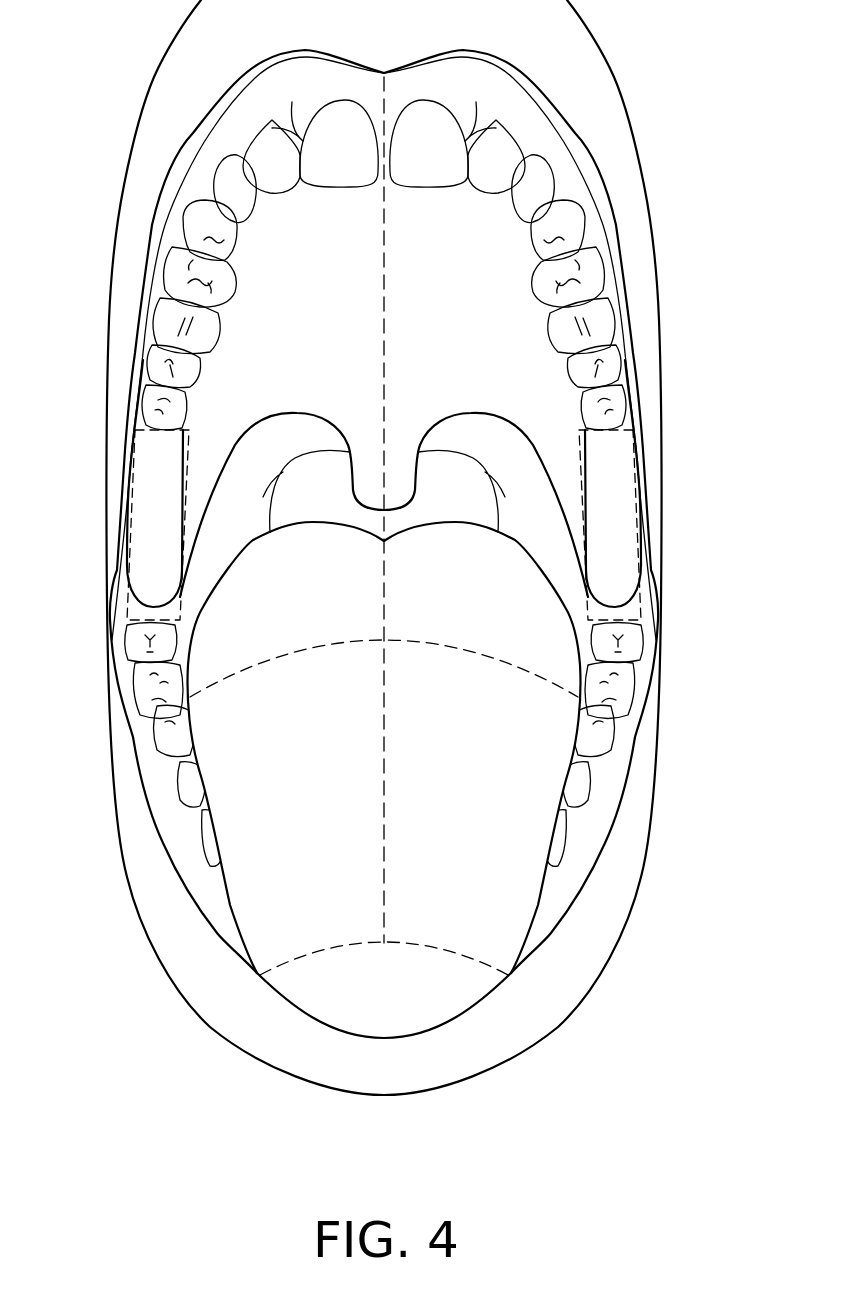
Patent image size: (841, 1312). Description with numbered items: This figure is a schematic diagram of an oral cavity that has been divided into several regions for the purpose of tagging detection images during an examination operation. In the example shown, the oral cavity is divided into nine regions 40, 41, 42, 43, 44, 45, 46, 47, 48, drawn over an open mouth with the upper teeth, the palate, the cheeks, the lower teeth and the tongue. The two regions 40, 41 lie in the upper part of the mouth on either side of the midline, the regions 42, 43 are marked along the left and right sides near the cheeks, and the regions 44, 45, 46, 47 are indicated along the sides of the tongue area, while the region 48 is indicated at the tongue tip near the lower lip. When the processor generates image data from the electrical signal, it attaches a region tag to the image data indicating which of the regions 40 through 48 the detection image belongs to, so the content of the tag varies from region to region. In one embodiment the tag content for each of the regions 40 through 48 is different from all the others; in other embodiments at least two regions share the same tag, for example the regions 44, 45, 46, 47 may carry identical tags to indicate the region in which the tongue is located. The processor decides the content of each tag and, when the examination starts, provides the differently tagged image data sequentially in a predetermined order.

The region of the oral cavity 40 is at (318, 320).
The region of the oral cavity 41 is at (485, 320).
The region of the oral cavity 42 is at (143, 506).
The region of the oral cavity 43 is at (618, 503).
The region of the oral cavity 44 is at (237, 634).
The region of the oral cavity 45 is at (529, 633).
The region of the oral cavity 46 is at (262, 793).
The region of the oral cavity 47 is at (505, 793).
The region of the oral cavity 48 is at (385, 1020).